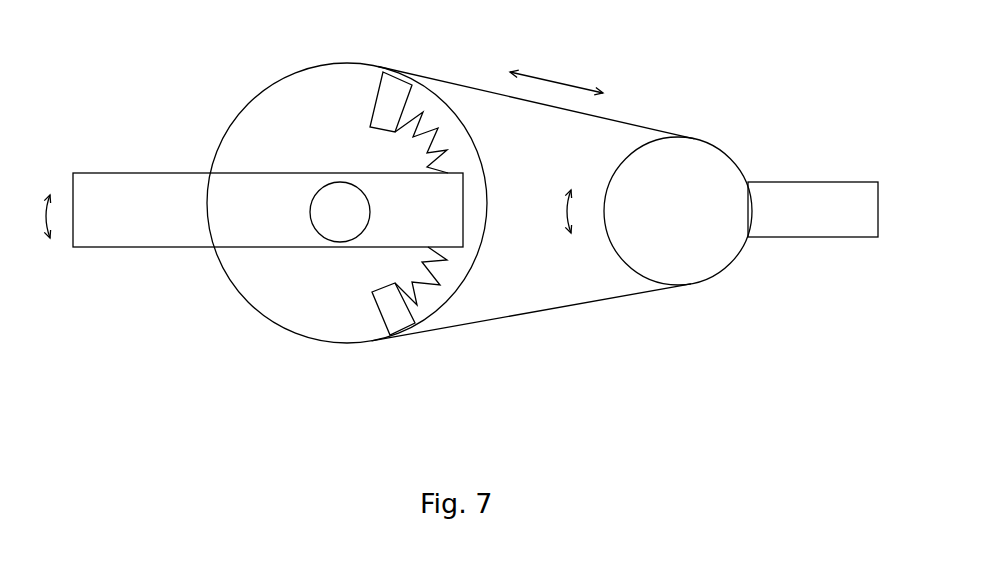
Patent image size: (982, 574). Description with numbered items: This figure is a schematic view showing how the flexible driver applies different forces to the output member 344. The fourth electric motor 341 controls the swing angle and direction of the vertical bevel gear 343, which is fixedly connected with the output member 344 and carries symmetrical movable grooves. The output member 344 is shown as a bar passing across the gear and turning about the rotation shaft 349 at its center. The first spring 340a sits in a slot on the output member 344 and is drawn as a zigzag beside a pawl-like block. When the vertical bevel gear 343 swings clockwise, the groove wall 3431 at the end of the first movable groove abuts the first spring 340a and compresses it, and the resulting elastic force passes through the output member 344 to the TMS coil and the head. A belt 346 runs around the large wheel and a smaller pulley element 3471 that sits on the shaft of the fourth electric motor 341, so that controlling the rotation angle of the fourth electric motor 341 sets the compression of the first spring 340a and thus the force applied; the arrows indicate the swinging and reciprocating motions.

The vertical bevel gear 343 is at (295, 330).
The output member 344 is at (117, 239).
The rotation shaft 349 is at (335, 195).
The groove wall 3431 is at (384, 97).
The first spring 340a is at (447, 153).
The pulley 3471 is at (700, 155).
The fourth electric motor 341 is at (817, 228).
The belt 346 is at (577, 305).